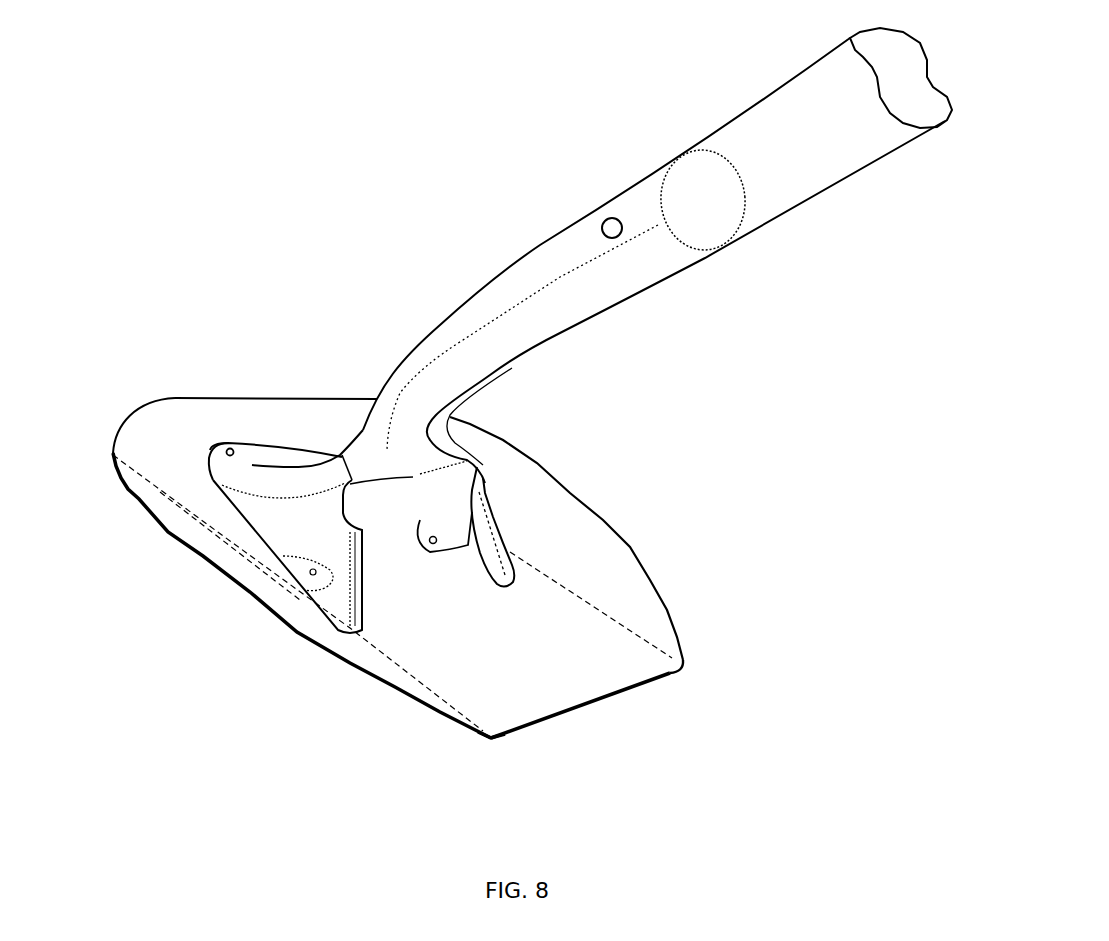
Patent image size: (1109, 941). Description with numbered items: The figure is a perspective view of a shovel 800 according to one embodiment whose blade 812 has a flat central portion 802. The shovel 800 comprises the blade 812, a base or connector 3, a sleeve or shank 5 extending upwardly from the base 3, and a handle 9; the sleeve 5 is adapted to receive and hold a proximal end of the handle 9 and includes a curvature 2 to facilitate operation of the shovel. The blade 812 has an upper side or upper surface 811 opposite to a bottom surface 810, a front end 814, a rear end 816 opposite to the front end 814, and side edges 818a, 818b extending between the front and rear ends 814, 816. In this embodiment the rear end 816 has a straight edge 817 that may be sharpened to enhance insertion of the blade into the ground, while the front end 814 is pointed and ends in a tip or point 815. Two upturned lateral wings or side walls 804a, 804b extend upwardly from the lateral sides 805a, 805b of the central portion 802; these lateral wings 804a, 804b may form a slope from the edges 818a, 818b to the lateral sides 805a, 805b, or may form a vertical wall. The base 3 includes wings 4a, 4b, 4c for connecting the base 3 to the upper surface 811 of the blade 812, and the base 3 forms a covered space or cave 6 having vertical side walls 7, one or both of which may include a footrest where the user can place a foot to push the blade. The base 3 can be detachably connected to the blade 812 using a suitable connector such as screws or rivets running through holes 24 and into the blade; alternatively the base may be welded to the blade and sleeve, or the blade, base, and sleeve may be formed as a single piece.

The shovel 800 is at (280, 108).
The curvature 2 is at (423, 336).
The sleeve or shank 5 is at (539, 244).
The handle 9 is at (760, 100).
The base or connector 3 is at (295, 445).
The holes 24 is at (231, 450).
The covered space or cave 6 is at (367, 505).
The wing 4c is at (423, 527).
The vertical side walls 7 is at (507, 550).
The blade 812 is at (122, 372).
The central portion 802 is at (478, 660).
The front end 814 is at (222, 398).
The tip or point 815 is at (161, 392).
The wing 4a is at (220, 462).
The side edge 818b is at (300, 635).
The lateral side 805b is at (430, 688).
The lateral wing or side wall 804b is at (160, 496).
The wing 4b is at (298, 565).
The bottom surface 810 is at (493, 744).
The straight edge 817 is at (583, 708).
The rear end 816 is at (660, 677).
The side edge 818a is at (630, 548).
The lateral side 805a is at (600, 612).
The lateral wing or side wall 804a is at (550, 584).
The upper side or upper surface 811 is at (615, 653).